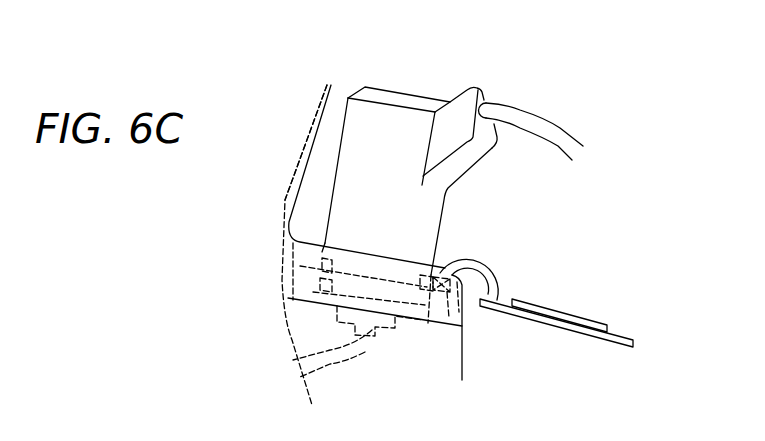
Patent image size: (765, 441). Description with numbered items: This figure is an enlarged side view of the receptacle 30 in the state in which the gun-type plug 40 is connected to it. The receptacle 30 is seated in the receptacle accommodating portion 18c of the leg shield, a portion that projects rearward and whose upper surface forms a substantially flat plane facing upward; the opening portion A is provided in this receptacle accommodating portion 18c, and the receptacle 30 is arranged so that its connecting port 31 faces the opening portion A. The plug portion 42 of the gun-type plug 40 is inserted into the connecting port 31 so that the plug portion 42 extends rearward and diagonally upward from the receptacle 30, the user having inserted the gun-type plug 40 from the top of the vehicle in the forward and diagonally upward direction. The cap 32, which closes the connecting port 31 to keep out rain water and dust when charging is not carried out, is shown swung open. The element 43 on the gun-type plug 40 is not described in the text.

The receptacle accommodating portion 18c is at (462, 350).
The receptacle 30 is at (413, 320).
The connecting port 31 is at (377, 270).
The cap 32 is at (617, 332).
The gun-type plug 40 is at (448, 203).
The plug portion 42 is at (383, 130).
The cable boot 43 is at (492, 90).
The opening portion A is at (442, 270).